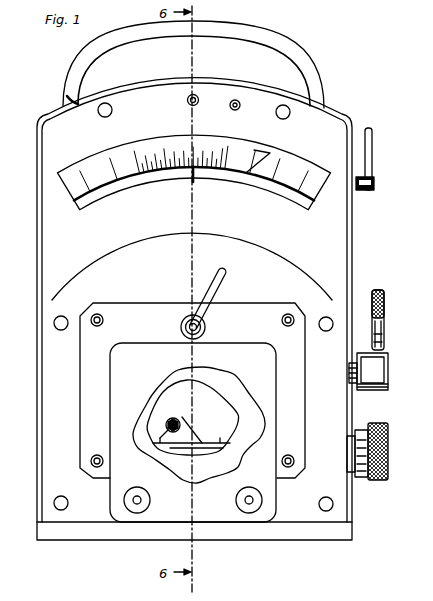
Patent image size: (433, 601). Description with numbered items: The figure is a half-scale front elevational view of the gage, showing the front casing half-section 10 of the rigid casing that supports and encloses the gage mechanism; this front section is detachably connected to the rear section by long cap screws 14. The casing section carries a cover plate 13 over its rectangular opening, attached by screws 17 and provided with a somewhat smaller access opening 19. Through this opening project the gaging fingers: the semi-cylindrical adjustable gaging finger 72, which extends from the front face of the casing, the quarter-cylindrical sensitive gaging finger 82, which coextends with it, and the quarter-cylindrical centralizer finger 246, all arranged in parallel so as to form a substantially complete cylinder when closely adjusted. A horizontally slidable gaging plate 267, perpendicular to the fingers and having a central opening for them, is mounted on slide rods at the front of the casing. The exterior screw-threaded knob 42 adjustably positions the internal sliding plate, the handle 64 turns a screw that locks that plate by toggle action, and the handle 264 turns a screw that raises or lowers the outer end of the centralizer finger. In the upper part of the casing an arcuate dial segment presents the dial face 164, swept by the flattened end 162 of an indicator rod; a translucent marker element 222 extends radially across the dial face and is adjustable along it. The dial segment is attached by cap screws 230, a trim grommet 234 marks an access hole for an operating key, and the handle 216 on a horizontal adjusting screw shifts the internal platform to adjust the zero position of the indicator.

The front casing half-section 10 is at (46, 440).
The cover plate 13 is at (155, 292).
The cap screws 14 is at (80, 303).
The screws 17 is at (92, 464).
The access opening 19 is at (228, 448).
The screw-threaded knob 42 is at (373, 483).
The handle 64 is at (376, 294).
The adjustable gaging finger 72 is at (179, 446).
The sensitive gaging finger 82 is at (167, 422).
The flattened ends of indicator rods 162 is at (190, 175).
The dial face 164 is at (175, 123).
The handle 216 is at (385, 123).
The translucent marker element 222 is at (254, 146).
The cap screws 230 is at (110, 118).
The trim grommet 234 is at (188, 100).
The centralizer finger 246 is at (180, 412).
The handle 264 is at (221, 290).
The gaging plate 267 is at (142, 330).